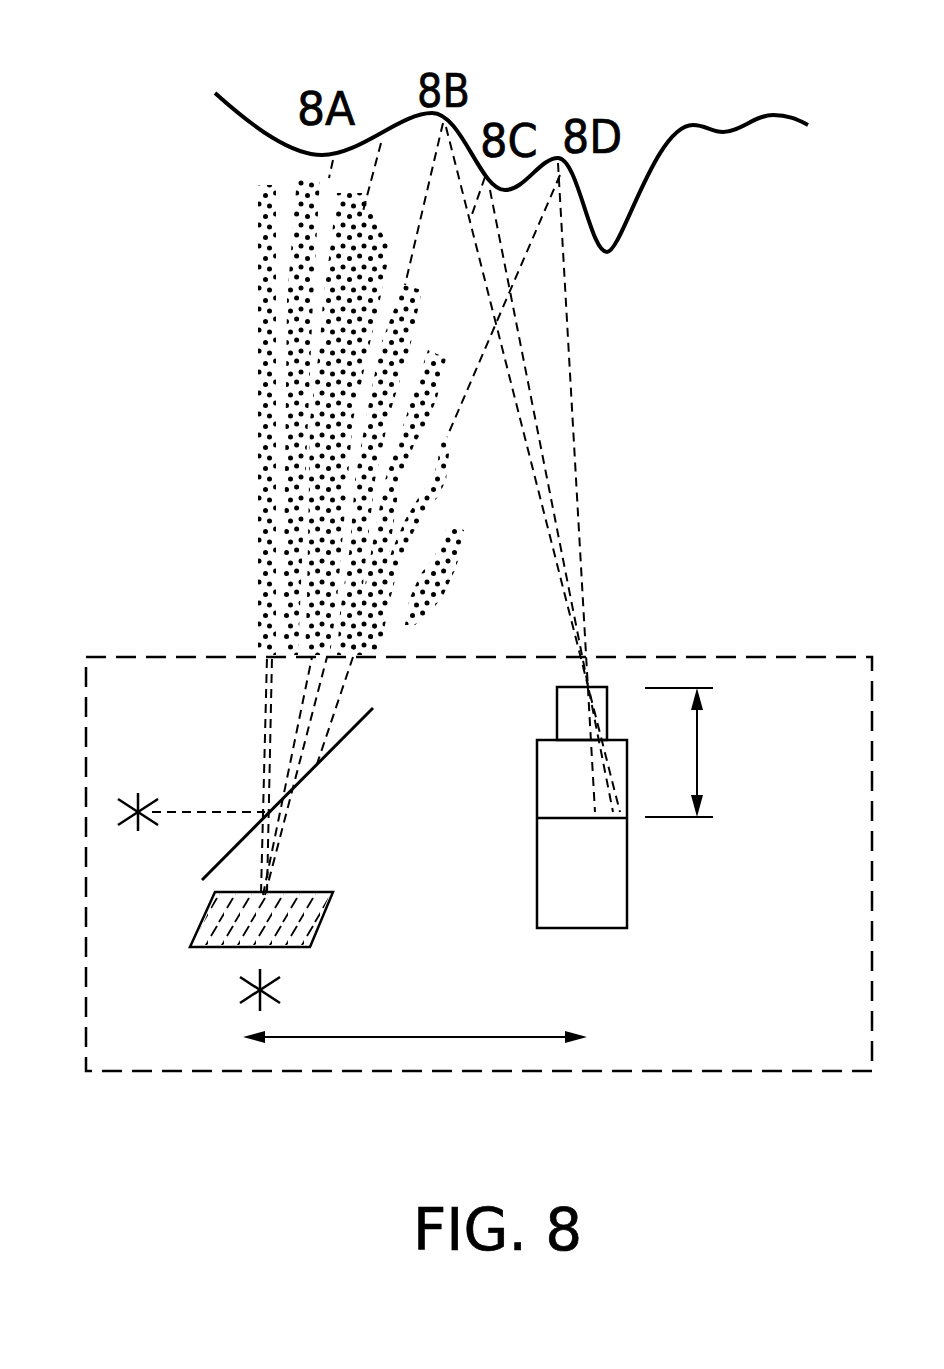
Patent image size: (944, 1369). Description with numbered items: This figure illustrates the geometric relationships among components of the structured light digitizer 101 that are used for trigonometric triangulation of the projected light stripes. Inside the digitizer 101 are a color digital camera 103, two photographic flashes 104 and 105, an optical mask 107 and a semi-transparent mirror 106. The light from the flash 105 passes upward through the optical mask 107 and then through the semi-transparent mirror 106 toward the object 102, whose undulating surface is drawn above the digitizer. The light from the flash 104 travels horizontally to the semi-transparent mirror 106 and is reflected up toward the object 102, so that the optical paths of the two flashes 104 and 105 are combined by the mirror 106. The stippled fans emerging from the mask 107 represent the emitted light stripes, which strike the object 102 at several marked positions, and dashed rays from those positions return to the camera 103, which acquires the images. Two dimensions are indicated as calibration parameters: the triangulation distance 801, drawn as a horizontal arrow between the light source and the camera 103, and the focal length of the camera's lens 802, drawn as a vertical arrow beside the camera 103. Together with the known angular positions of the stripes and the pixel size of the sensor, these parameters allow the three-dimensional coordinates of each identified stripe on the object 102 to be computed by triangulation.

The structured light digitizer 101 is at (857, 712).
The object 102 is at (807, 183).
The color digital camera 103 is at (537, 847).
The photographic flash 104 is at (145, 803).
The photographic flash 105 is at (253, 983).
The semi-transparent mirror 106 is at (317, 765).
The optical mask 107 is at (323, 917).
The triangulation distance 801 is at (415, 1011).
The focal length of the camera's lens 802 is at (697, 773).